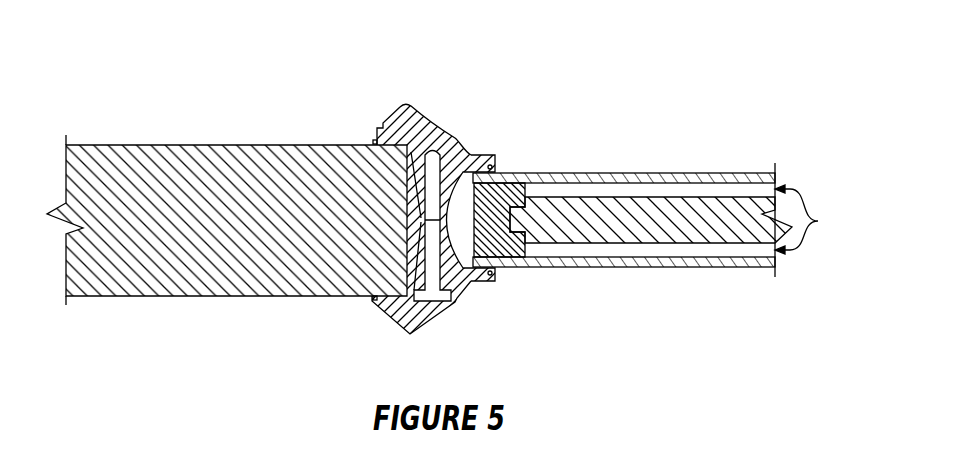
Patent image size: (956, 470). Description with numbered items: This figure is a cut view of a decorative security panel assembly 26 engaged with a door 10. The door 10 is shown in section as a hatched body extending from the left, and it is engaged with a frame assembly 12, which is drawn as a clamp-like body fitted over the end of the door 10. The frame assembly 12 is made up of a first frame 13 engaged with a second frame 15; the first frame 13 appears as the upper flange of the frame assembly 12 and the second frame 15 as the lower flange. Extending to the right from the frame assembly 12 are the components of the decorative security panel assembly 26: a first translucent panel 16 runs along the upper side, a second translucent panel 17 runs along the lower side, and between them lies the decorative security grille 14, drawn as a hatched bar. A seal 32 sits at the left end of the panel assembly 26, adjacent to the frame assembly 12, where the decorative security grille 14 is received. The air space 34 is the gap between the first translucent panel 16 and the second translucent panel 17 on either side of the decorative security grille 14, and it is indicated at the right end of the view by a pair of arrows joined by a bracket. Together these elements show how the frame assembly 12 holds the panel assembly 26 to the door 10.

The door 10 is at (177, 280).
The frame assembly 12 is at (513, 96).
The first frame 13 is at (402, 122).
The decorative security grille 14 is at (617, 184).
The second frame 15 is at (397, 325).
The first translucent panel 16 is at (707, 176).
The second translucent panel 17 is at (690, 268).
The decorative security panel assembly 26 is at (772, 143).
The seal 32 is at (503, 262).
The air space 34 is at (811, 219).